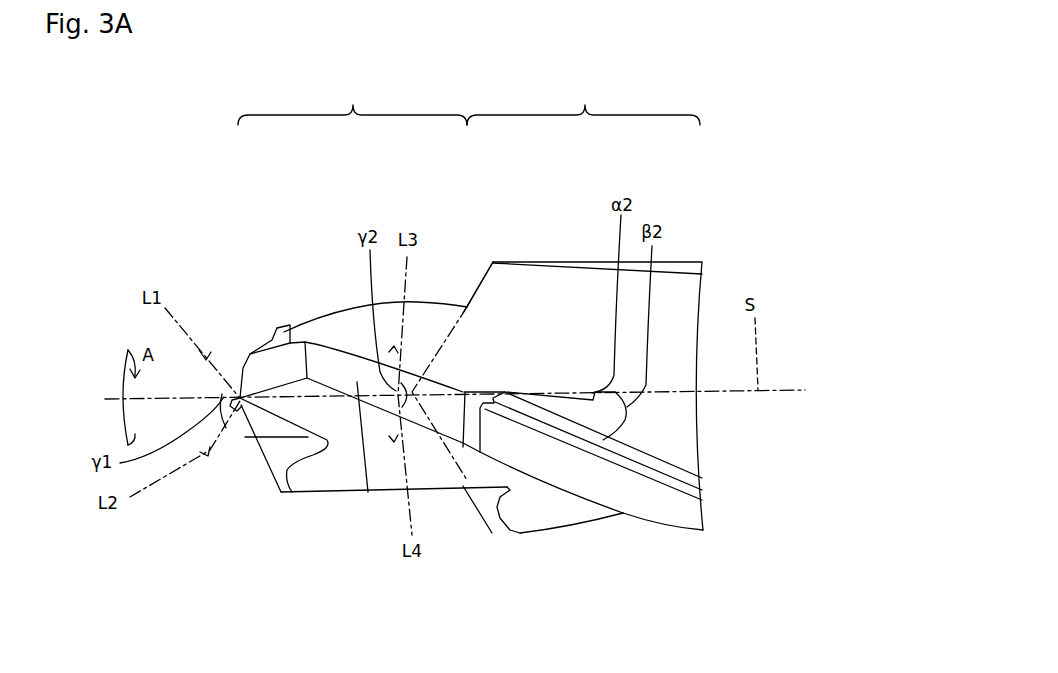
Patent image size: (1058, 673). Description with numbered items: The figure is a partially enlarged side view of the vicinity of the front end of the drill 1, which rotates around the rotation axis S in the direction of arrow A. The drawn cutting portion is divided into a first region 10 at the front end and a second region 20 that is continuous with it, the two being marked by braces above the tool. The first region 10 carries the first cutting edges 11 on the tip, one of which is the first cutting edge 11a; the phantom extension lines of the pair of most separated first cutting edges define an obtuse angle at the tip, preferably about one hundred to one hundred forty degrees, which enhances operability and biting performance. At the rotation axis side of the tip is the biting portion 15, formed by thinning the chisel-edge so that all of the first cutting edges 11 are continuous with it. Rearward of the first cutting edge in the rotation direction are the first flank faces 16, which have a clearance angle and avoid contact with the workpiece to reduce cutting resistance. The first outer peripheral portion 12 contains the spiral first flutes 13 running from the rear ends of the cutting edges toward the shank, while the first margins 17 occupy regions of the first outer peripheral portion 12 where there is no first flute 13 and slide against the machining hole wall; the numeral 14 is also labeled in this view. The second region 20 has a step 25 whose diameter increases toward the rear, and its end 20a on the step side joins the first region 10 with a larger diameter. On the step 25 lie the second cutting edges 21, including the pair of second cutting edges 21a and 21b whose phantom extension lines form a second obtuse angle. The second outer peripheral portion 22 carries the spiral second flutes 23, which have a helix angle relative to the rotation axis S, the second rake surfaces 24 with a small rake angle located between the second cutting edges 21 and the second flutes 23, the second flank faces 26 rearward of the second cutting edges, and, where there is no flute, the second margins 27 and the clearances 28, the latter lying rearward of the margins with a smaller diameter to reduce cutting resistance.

The drill 1 is at (727, 262).
The first region 10 is at (352, 103).
The second region 20 is at (583, 103).
The first cutting edges 11 is at (279, 329).
The first cutting edge 11a is at (265, 462).
The first outer peripheral portion 12 is at (340, 493).
The first flutes 13 is at (318, 473).
The margin 14 is at (283, 480).
The biting portion 15 is at (243, 375).
The first flank faces 16 is at (265, 360).
The first margins 17 is at (368, 492).
The end of the second region 20a is at (467, 306).
The second cutting edges 21 is at (483, 390).
The second cutting edge 21a is at (478, 507).
The second cutting edge 21b is at (479, 289).
The second outer peripheral portion 22 is at (598, 523).
The second flutes 23 is at (547, 392).
The second rake surfaces 24 is at (502, 390).
The step 25 is at (508, 510).
The second flank faces 26 is at (472, 428).
The second margins 27 is at (642, 462).
The clearances 28 is at (682, 513).